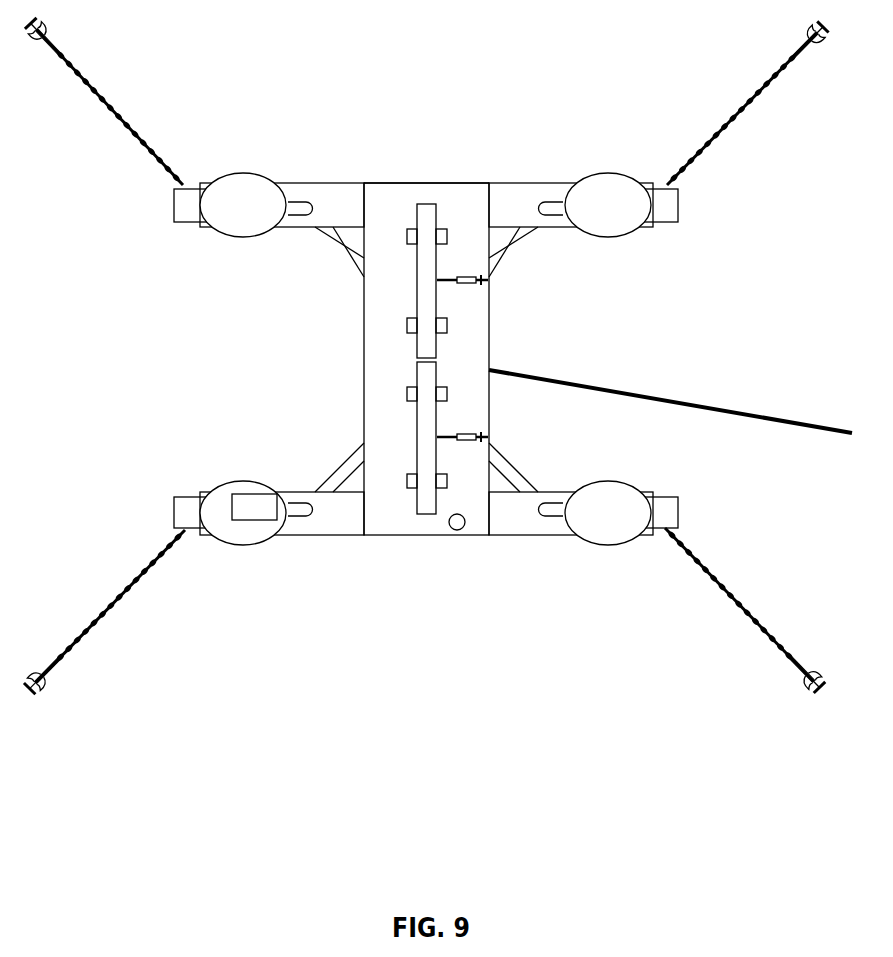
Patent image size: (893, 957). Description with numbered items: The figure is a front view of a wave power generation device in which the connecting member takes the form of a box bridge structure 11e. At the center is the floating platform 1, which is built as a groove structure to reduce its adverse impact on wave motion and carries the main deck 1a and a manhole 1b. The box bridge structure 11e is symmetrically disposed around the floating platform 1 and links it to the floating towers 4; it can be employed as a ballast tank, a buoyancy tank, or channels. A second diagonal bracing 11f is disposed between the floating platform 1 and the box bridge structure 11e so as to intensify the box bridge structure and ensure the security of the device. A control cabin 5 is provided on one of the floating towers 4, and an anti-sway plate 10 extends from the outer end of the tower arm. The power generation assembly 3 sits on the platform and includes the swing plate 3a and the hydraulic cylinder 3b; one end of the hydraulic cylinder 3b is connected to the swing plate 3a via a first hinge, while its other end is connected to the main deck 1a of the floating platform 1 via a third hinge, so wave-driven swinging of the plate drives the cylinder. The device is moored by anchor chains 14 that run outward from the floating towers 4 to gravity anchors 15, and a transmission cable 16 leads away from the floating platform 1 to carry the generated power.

The floating platform 1 is at (418, 548).
The main deck 1a is at (437, 193).
The manhole 1b is at (459, 530).
The power generation assembly 3 is at (452, 297).
The swing plate 3a is at (421, 232).
The hydraulic cylinder 3b is at (487, 282).
The floating tower 4 is at (270, 172).
The control cabin 5 is at (240, 522).
The anti-sway plate 10 is at (660, 203).
The box bridge structure 11e is at (525, 520).
The second diagonal bracing 11f is at (347, 252).
The anchor chain 14 is at (737, 123).
The gravity anchor 15 is at (820, 673).
The transmission cable 16 is at (743, 412).